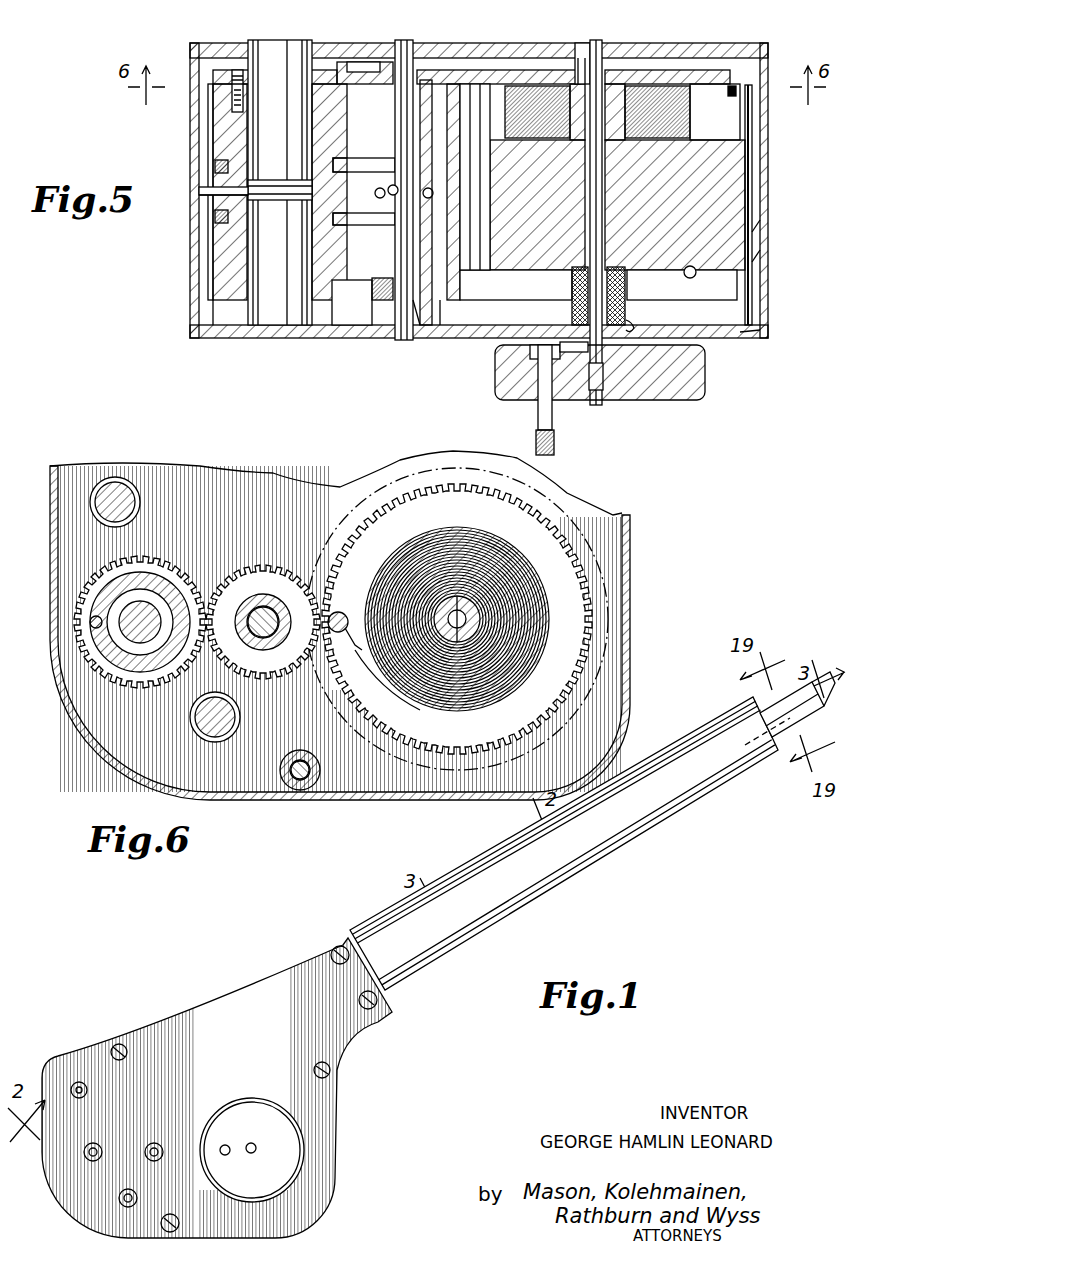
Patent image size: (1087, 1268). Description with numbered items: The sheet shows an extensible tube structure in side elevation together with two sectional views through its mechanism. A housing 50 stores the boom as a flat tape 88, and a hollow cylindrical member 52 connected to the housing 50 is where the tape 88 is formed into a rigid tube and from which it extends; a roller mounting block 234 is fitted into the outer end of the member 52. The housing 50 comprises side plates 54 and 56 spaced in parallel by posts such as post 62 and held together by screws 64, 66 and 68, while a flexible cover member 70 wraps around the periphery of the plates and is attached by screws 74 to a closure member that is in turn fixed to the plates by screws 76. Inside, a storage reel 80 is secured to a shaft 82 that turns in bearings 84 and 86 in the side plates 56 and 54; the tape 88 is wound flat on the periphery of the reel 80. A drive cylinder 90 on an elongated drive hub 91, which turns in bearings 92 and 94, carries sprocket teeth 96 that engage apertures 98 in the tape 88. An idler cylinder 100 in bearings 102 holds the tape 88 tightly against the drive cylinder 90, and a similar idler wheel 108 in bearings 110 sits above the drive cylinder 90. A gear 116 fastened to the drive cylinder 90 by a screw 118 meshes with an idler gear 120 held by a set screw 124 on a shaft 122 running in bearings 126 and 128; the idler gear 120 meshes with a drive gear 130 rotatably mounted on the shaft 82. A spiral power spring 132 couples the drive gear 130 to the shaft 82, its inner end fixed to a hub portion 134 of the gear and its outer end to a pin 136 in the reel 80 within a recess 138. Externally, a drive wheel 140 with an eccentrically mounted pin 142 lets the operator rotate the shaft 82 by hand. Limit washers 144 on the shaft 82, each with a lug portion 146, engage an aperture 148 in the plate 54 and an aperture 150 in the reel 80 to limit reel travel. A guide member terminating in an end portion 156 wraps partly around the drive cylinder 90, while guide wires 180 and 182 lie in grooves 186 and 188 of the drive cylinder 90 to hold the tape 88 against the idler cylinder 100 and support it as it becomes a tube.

In FIG. 5, the housing 50 is at (192, 344).
In FIG. 6, the housing 50 is at (640, 553).
In FIG. 1, the housing 50 is at (217, 989).
In FIG. 1, the hollow cylindrical member 52 is at (508, 920).
In FIG. 5, the side plate 54 is at (768, 332).
In FIG. 1, the side plate 54 is at (336, 1118).
In FIG. 5, the side plate 56 is at (768, 46).
In FIG. 6, the side plate 56 is at (125, 738).
In FIG. 5, the post 62 is at (445, 326).
In FIG. 6, the post 62 is at (298, 792).
In FIG. 1, the screw 64 is at (330, 1074).
In FIG. 1, the screw 66 is at (119, 1044).
In FIG. 1, the screw 68 is at (168, 1232).
In FIG. 5, the flexible cover member 70 is at (768, 258).
In FIG. 6, the flexible cover member 70 is at (340, 800).
In FIG. 1, the screw 74 is at (338, 945).
In FIG. 1, the screw 76 is at (360, 998).
In FIG. 5, the storage reel 80 is at (752, 160).
In FIG. 5, the shaft 82 is at (598, 42).
In FIG. 1, the shaft 82 is at (252, 1143).
In FIG. 5, the bearing 84 is at (588, 48).
In FIG. 5, the bearing 86 is at (575, 352).
In FIG. 5, the tape 88 is at (768, 228).
In FIG. 1, the tape 88 is at (810, 710).
In FIG. 5, the drive cylinder 90 is at (222, 325).
In FIG. 6, the drive cylinder 90 is at (125, 632).
In FIG. 5, the drive hub 91 is at (247, 325).
In FIG. 6, the drive hub 91 is at (105, 660).
In FIG. 1, the drive hub 91 is at (100, 1148).
In FIG. 5, the bearing 92 is at (262, 325).
In FIG. 1, the bearing 92 is at (84, 1155).
In FIG. 5, the bearing 94 is at (262, 45).
In FIG. 5, the sprocket teeth 96 is at (200, 190).
In FIG. 5, the aperture 98 is at (428, 198).
In FIG. 5, the idler cylinder 100 is at (358, 300).
In FIG. 6, the idler cylinder 100 is at (204, 730).
In FIG. 1, the idler cylinder 100 is at (126, 1204).
In FIG. 1, the bearing 102 is at (119, 1198).
In FIG. 6, the idler wheel 108 is at (118, 482).
In FIG. 1, the idler wheel 108 is at (86, 1088).
In FIG. 1, the bearing 110 is at (80, 1082).
In FIG. 5, the gear 116 is at (310, 70).
In FIG. 6, the gear 116 is at (130, 680).
In FIG. 5, the screw 118 is at (237, 68).
In FIG. 6, the screw 118 is at (92, 624).
In FIG. 5, the idler gear 120 is at (440, 75).
In FIG. 6, the idler gear 120 is at (240, 570).
In FIG. 5, the shaft 122 is at (415, 330).
In FIG. 6, the shaft 122 is at (266, 650).
In FIG. 1, the shaft 122 is at (155, 1157).
In FIG. 5, the set screw 124 is at (425, 88).
In FIG. 5, the bearing 126 is at (383, 300).
In FIG. 1, the bearing 126 is at (170, 1133).
In FIG. 5, the bearing 128 is at (404, 58).
In FIG. 5, the drive gear 130 is at (500, 70).
In FIG. 6, the drive gear 130 is at (575, 666).
In FIG. 5, the spiral power spring 132 is at (700, 85).
In FIG. 6, the spiral power spring 132 is at (558, 642).
In FIG. 5, the hub portion 134 is at (620, 90).
In FIG. 6, the hub portion 134 is at (482, 620).
In FIG. 5, the pin 136 is at (478, 270).
In FIG. 6, the pin 136 is at (336, 612).
In FIG. 5, the recess 138 is at (735, 88).
In FIG. 5, the drive wheel 140 is at (688, 398).
In FIG. 1, the drive wheel 140 is at (300, 1150).
In FIG. 5, the eccentrically mounted pin 142 is at (538, 416).
In FIG. 1, the eccentrically mounted pin 142 is at (224, 1156).
In FIG. 5, the limit washer 144 is at (572, 290).
In FIG. 5, the lug portion 146 is at (614, 325).
In FIG. 5, the aperture 148 is at (632, 330).
In FIG. 5, the aperture 150 is at (650, 282).
In FIG. 5, the end portion 156 is at (205, 196).
In FIG. 5, the guide wire 180 is at (367, 158).
In FIG. 5, the guide wire 182 is at (366, 225).
In FIG. 5, the groove 186 is at (215, 166).
In FIG. 5, the groove 188 is at (215, 220).
In FIG. 1, the roller mounting block 234 is at (750, 712).